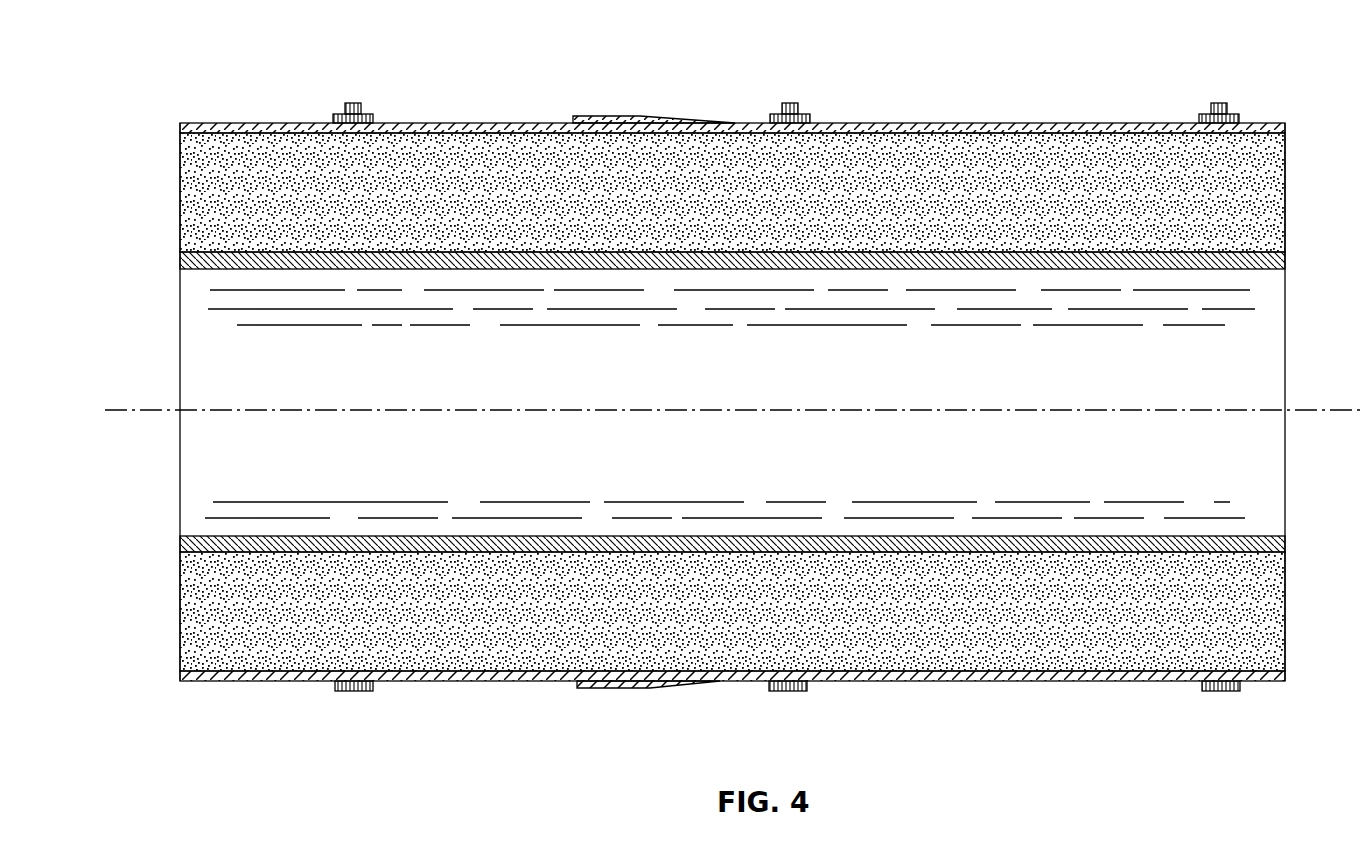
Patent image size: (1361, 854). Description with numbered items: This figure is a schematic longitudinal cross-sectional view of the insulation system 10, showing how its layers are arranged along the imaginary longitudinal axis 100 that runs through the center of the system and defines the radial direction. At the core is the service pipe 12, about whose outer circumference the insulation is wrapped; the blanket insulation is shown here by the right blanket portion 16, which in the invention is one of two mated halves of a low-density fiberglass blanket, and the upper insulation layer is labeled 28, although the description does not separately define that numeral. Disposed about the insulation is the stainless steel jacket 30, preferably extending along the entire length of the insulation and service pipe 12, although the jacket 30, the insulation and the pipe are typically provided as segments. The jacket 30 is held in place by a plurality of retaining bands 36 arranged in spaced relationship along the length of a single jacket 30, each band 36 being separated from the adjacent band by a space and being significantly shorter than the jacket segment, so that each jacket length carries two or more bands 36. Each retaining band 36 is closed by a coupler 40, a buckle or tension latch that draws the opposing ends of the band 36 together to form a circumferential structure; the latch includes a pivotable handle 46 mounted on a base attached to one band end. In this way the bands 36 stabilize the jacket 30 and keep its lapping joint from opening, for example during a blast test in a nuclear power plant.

The insulation system 10 is at (212, 68).
The service pipe 12 is at (937, 537).
The right blanket portion 16 is at (733, 621).
The insulation outer surface 28 is at (1262, 226).
The stainless steel jacket 30 is at (1048, 122).
The retaining band 36 is at (352, 693).
The coupler 40 is at (373, 118).
The handle 46 is at (345, 110).
The imaginary longitudinal axis 100 is at (598, 410).